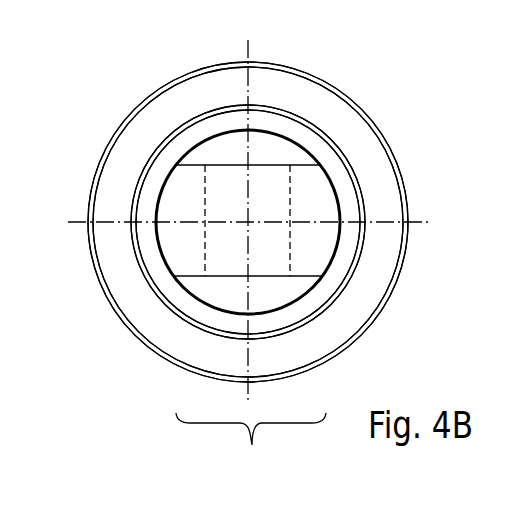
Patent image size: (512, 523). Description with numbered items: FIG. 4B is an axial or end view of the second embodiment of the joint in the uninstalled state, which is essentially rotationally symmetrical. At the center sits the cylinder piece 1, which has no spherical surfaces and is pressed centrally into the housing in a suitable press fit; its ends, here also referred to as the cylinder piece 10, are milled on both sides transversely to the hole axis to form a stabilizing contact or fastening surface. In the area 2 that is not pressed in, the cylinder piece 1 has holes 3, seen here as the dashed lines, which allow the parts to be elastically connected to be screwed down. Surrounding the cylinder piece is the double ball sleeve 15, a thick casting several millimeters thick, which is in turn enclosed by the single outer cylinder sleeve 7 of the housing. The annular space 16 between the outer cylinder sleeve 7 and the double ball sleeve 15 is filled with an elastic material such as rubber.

The cylinder piece 1 is at (253, 150).
The area 2 is at (178, 192).
The holes 3 is at (225, 192).
The outer cylinder sleeve 7 is at (368, 325).
The cylinder piece 10 is at (251, 445).
The double ball sleeve 15 is at (347, 253).
The space 16 is at (375, 155).